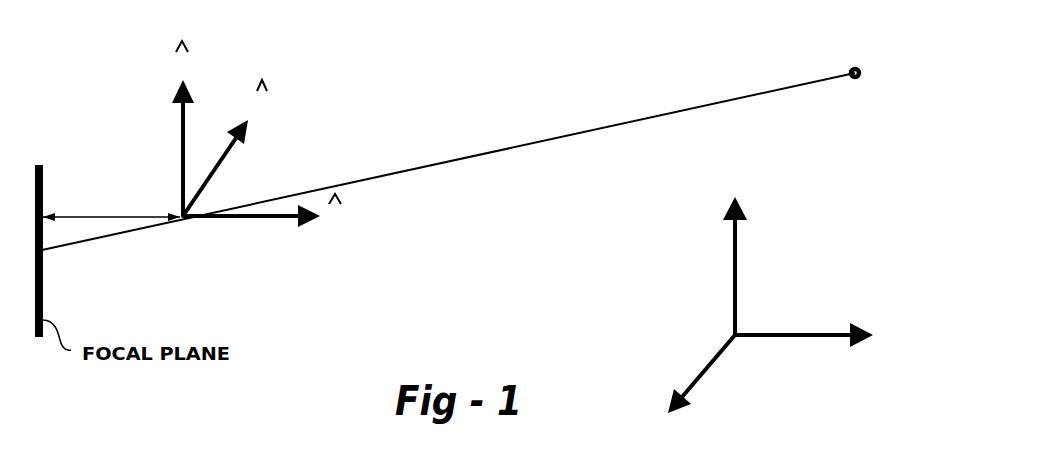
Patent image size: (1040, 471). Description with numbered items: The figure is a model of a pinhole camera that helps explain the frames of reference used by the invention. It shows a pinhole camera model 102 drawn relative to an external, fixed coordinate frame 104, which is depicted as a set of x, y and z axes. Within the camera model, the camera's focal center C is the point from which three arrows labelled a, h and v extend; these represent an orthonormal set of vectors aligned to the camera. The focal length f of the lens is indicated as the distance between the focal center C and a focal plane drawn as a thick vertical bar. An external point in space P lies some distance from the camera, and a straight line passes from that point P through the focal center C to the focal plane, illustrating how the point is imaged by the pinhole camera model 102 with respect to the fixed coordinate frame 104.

The pinhole camera model 102 is at (112, 108).
The external fixed coordinate frame 104 is at (688, 298).
The external point in space P is at (862, 25).
The camera focal center C is at (196, 233).
The focal length f is at (111, 202).